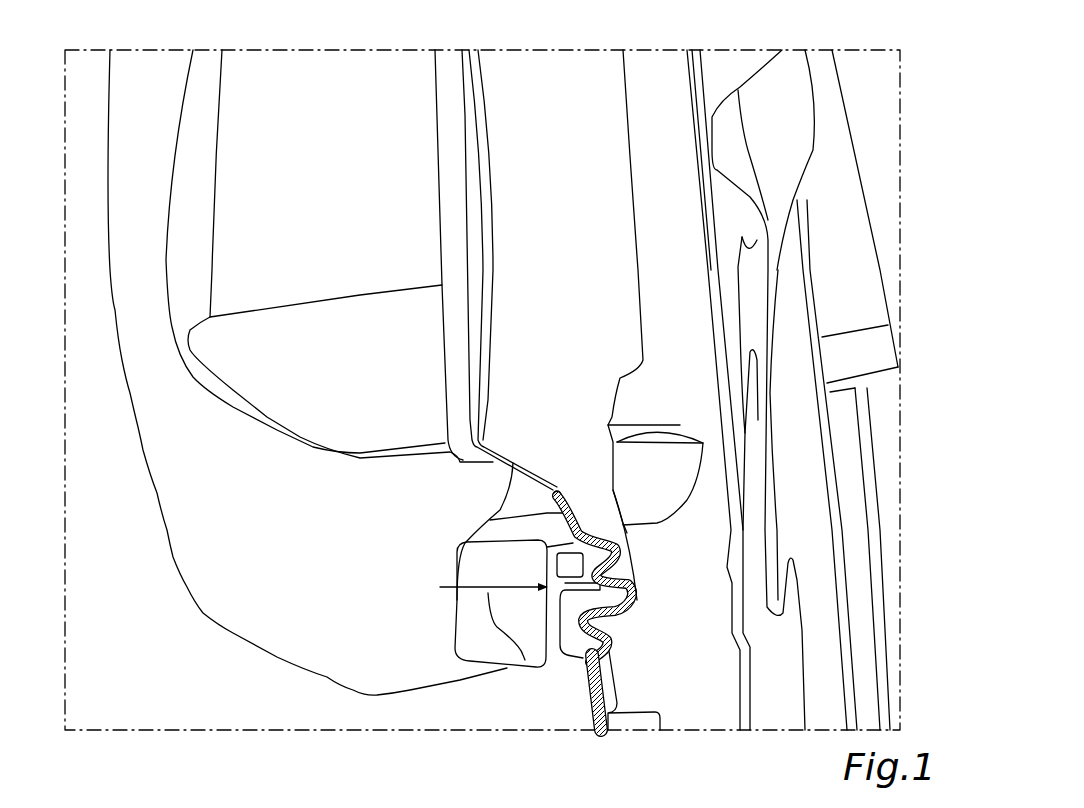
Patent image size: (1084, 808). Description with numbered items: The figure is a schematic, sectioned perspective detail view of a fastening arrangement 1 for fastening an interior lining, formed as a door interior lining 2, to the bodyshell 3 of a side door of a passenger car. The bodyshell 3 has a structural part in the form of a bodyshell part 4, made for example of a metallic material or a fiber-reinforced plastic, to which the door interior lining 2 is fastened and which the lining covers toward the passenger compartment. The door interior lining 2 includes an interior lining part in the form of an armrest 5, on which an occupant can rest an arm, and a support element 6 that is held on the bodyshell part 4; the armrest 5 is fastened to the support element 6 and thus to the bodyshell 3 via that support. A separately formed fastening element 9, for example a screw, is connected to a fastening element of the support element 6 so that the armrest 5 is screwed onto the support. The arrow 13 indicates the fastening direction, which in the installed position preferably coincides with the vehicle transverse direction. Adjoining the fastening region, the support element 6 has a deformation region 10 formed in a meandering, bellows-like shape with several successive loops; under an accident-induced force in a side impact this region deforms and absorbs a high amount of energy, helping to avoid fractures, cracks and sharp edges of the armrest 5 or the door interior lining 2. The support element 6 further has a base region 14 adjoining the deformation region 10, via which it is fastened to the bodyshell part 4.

The fastening arrangement 1 is at (421, 716).
The door interior lining 2 is at (229, 55).
The bodyshell 3 is at (808, 64).
The bodyshell part 4 is at (793, 200).
The armrest 5 is at (157, 388).
The support element 6 is at (608, 692).
The fastening element 9 is at (622, 603).
The deformation region 10 is at (626, 618).
The arrow 13 is at (525, 660).
The base region 14 is at (603, 465).